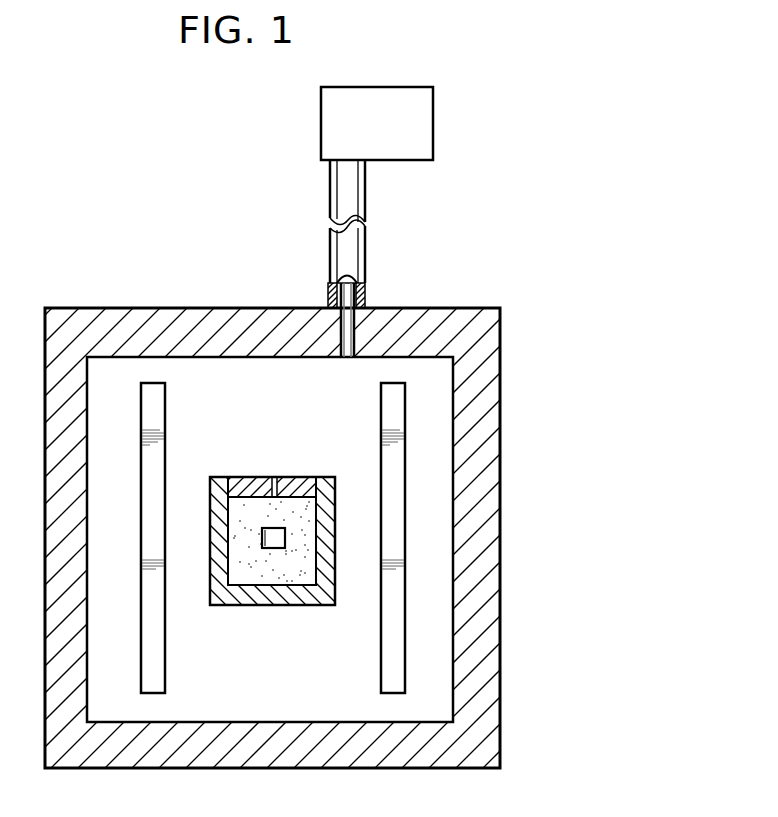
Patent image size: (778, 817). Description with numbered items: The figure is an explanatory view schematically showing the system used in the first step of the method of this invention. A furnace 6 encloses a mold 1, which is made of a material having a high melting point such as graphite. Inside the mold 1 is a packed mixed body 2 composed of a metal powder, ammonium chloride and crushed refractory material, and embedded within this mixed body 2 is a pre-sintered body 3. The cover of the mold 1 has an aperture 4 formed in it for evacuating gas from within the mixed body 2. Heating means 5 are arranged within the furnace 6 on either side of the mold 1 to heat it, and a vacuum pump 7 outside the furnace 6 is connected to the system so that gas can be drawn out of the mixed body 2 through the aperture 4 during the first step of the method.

The mold 1 is at (275, 550).
The packed mixed body 2 is at (271, 575).
The pre-sintered body 3 is at (311, 522).
The aperture 4 is at (273, 471).
The heating means 5 is at (273, 538).
The furnace 6 is at (389, 500).
The vacuum pump 7 is at (355, 222).